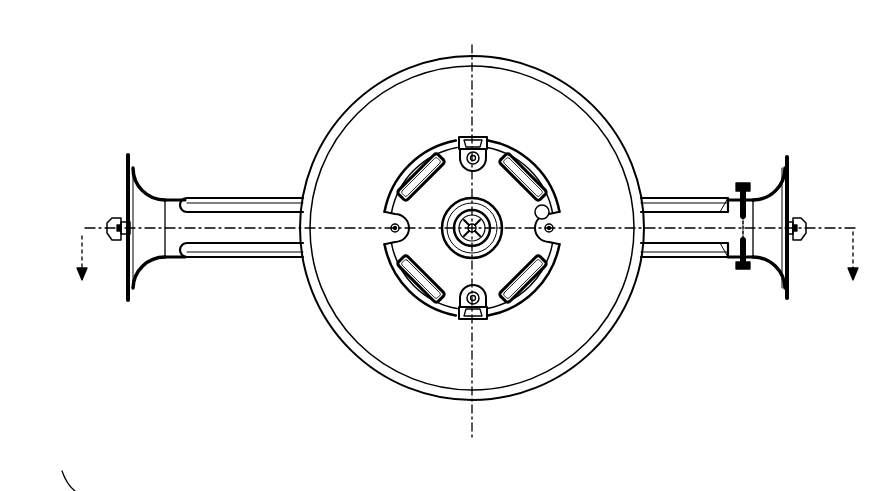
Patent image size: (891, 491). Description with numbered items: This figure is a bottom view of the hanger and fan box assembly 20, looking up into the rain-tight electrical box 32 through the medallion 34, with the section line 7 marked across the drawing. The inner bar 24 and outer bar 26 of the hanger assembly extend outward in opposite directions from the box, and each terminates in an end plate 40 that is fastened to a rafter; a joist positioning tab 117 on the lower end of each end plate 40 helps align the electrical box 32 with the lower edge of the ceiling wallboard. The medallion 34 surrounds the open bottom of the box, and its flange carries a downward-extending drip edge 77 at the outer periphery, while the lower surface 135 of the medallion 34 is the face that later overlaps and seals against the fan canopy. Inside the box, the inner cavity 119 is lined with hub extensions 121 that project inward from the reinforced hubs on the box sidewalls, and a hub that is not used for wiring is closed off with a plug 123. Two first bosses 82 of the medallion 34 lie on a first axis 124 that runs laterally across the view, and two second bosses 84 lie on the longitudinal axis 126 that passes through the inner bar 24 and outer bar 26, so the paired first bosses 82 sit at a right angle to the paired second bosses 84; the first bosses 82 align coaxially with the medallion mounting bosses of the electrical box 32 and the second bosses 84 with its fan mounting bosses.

The hanger and fan box assembly 20 is at (100, 117).
The inner bar 24 is at (180, 198).
The outer bar 26 is at (246, 198).
The end plate 40 is at (130, 192).
The section line 7- 7 is at (469, 254).
The medallion 34 is at (592, 97).
The rain-tight electrical box 32 is at (486, 148).
The hub extensions 121 is at (533, 175).
The second bosses 84 is at (553, 215).
The plug 123 is at (492, 240).
The longitudinal axis 126 is at (365, 233).
The inner cavity 119 is at (420, 234).
The first bosses 82 is at (462, 312).
The lower surface 135 is at (536, 360).
The first axis 124 is at (470, 418).
The drip edge 77 is at (508, 392).
The joist positioning tab 117 is at (800, 240).